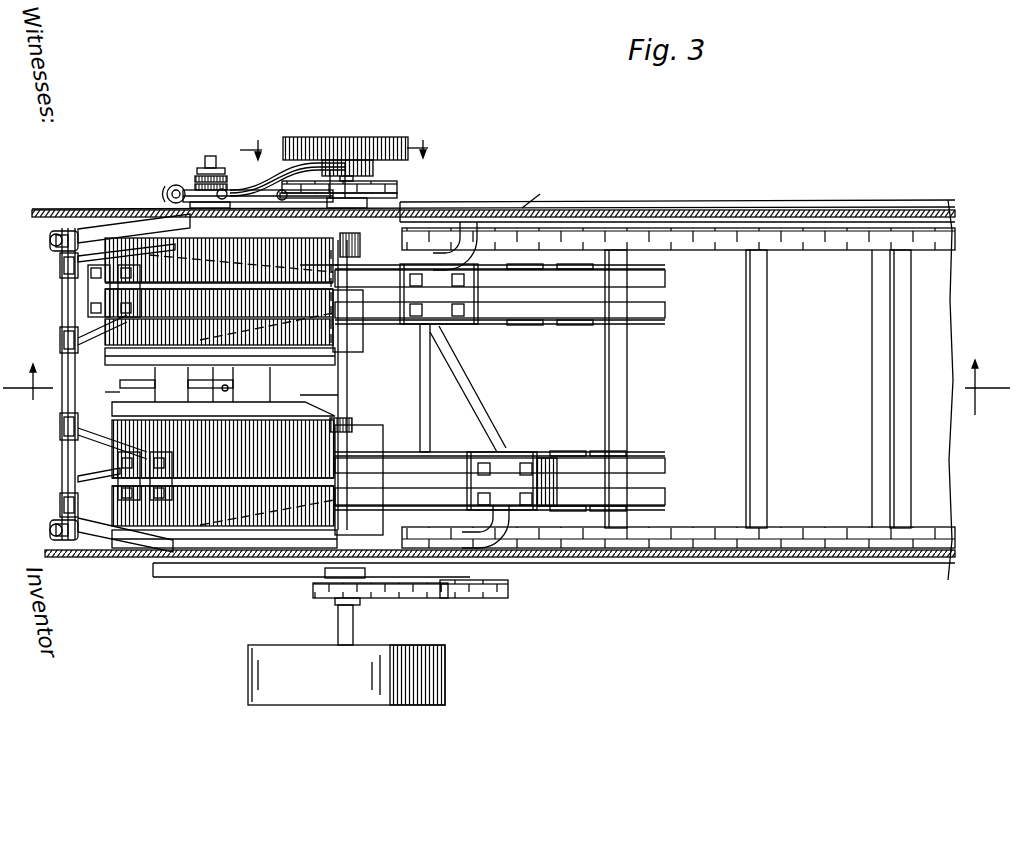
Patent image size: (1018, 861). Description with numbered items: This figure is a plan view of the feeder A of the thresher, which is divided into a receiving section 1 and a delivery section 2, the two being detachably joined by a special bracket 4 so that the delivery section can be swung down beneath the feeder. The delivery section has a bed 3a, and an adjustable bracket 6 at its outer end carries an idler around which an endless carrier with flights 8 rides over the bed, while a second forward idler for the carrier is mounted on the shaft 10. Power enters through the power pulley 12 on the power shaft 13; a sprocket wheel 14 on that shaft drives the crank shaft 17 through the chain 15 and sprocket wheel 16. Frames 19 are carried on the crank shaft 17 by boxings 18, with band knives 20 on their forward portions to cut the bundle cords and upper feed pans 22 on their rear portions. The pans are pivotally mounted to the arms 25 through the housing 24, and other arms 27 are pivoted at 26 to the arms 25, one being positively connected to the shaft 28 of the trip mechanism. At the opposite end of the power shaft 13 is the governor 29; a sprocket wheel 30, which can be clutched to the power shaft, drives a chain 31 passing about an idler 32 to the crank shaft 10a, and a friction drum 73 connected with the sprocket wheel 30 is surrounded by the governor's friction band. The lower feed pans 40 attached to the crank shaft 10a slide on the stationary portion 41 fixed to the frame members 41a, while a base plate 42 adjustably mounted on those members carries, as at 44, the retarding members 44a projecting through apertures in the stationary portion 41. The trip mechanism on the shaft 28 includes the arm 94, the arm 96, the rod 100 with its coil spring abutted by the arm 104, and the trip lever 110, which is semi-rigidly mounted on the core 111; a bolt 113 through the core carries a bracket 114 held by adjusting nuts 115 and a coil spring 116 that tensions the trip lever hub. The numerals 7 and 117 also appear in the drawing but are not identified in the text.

The receiving section 1 is at (432, 210).
The delivery section 2 is at (893, 204).
The bed 3a is at (857, 389).
The bracket 4 is at (506, 387).
The adjustable bracket 6 is at (339, 146).
The cross beam 7 is at (718, 250).
The flights 8 is at (628, 324).
The shaft 10 is at (420, 378).
The crank shaft 10a is at (308, 385).
The power pulley 12 is at (392, 692).
The power shaft 13 is at (353, 625).
The sprocket wheel 14 is at (329, 601).
The chain 15 is at (494, 598).
The sprocket wheel 16 is at (440, 598).
The crank shaft 17 is at (500, 418).
The boxings 18 is at (418, 322).
The frames 19 is at (562, 288).
The band knives 20 is at (600, 264).
The upper feed pans 22 is at (370, 424).
The housing 24 is at (88, 296).
The arms 25 is at (60, 334).
The pivotal connection 26 is at (60, 280).
The arms 27 is at (50, 240).
The shaft 28 is at (174, 186).
The governor 29 is at (378, 135).
The sprocket wheel 30 is at (400, 178).
The chain 31 is at (330, 170).
The idler 32 is at (400, 194).
The lower feed pans 40 is at (60, 354).
The stationary portion 41 is at (120, 382).
The frame members 41a is at (419, 385).
The base plate 42 is at (228, 384).
The attachment 44 is at (223, 384).
The retarding members 44a is at (99, 400).
The friction drum 73 is at (350, 160).
The arm 94 is at (262, 170).
The arm 96 is at (182, 192).
The rod 100 is at (226, 184).
The arm 104 is at (224, 176).
The trip lever 110 is at (282, 165).
The core 111 is at (220, 301).
The bolt 113 is at (222, 168).
The bracket 114 is at (220, 190).
The adjusting nuts 115 is at (212, 156).
The coil spring 116 is at (212, 185).
The arm 117 is at (342, 162).
The feeder A is at (537, 190).